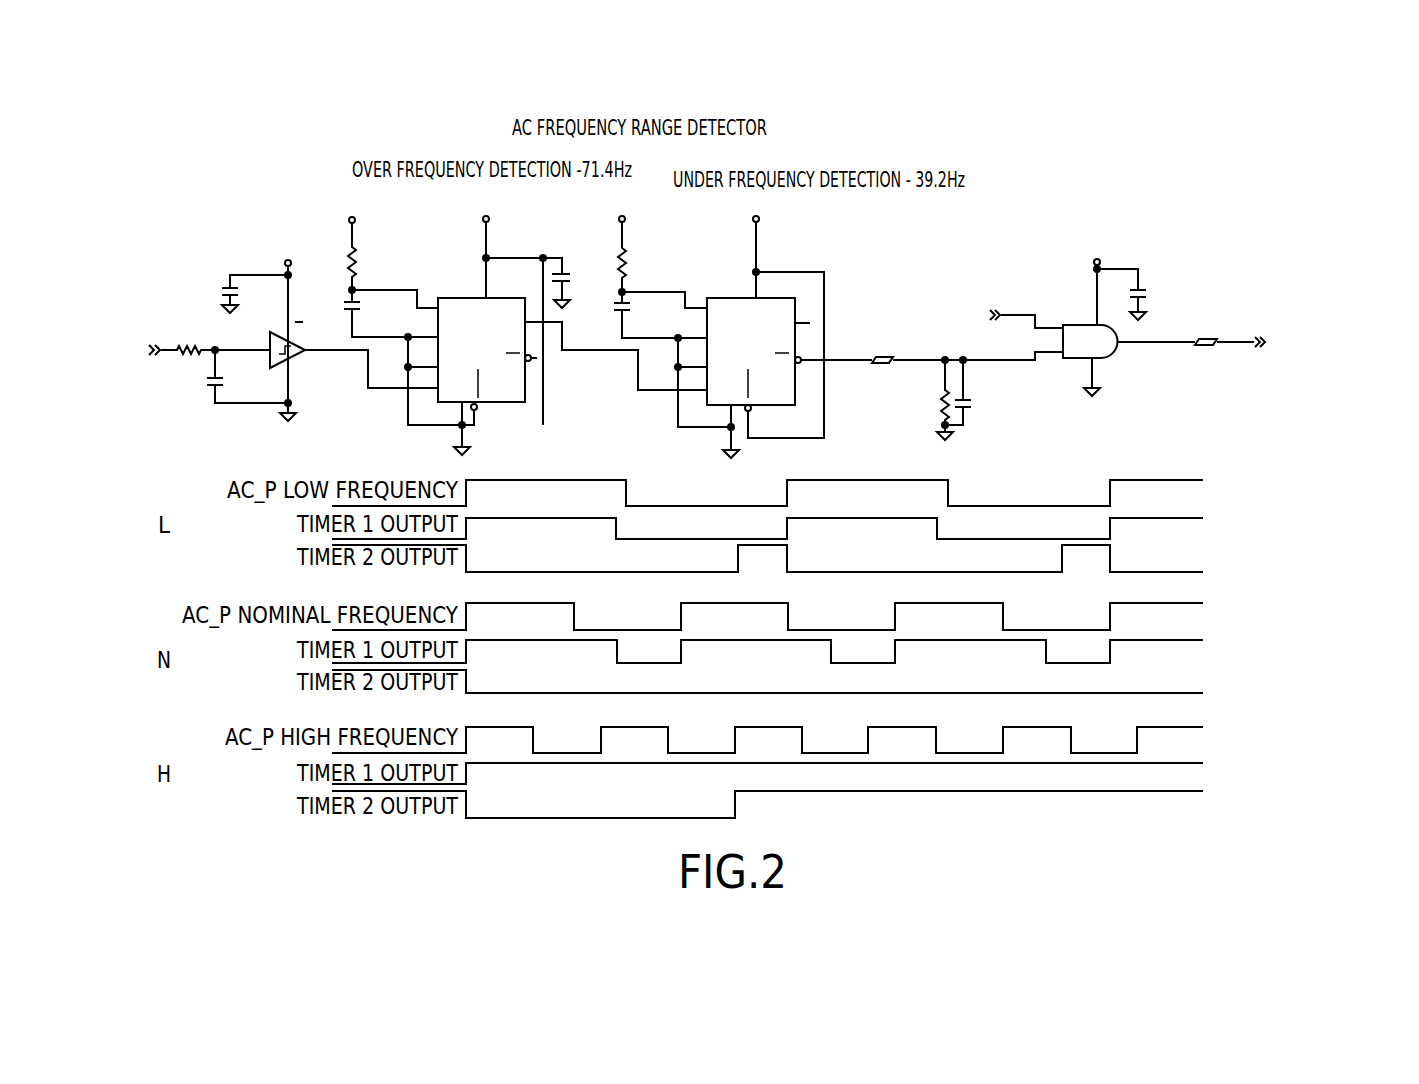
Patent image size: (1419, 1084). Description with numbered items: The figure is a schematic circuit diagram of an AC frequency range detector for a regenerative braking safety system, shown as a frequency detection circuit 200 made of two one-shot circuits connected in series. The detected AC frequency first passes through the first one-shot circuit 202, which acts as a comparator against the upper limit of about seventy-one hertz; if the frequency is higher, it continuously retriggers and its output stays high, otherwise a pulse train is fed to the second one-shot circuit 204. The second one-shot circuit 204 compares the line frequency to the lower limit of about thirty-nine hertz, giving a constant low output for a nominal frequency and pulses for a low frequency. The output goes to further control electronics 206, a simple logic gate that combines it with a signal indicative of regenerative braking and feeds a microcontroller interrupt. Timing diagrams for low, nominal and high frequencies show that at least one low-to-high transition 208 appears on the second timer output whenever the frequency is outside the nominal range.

The frequency detection circuit 200 is at (1146, 247).
The first one-shot circuit 202 is at (497, 254).
The second one-shot circuit 204 is at (789, 254).
The further control electronics 206 is at (1056, 294).
The low-to-high transition 208 is at (737, 559).